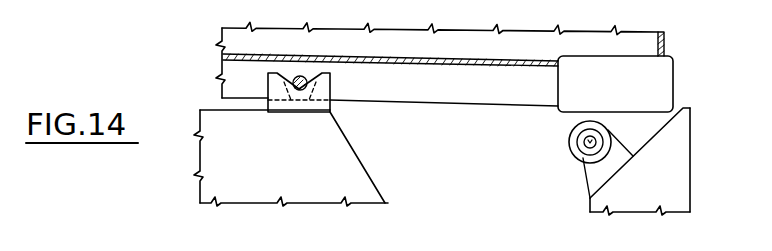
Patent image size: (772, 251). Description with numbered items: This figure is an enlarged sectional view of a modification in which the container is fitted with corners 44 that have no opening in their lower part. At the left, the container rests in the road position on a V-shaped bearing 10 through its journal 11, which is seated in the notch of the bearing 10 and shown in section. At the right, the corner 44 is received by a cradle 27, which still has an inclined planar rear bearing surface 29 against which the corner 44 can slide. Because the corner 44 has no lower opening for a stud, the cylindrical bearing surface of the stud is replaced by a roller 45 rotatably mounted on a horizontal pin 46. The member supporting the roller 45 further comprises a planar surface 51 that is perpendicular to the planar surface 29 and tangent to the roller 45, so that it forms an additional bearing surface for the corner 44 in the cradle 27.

The V-shaped bearing 10 is at (328, 88).
The journal 11 is at (299, 76).
The corner 44 is at (654, 79).
The cradle 27 is at (640, 161).
The planar rear bearing surface 29 is at (657, 124).
The planar surface 51 is at (624, 140).
The roller 45 is at (574, 130).
The horizontal pin 46 is at (587, 150).